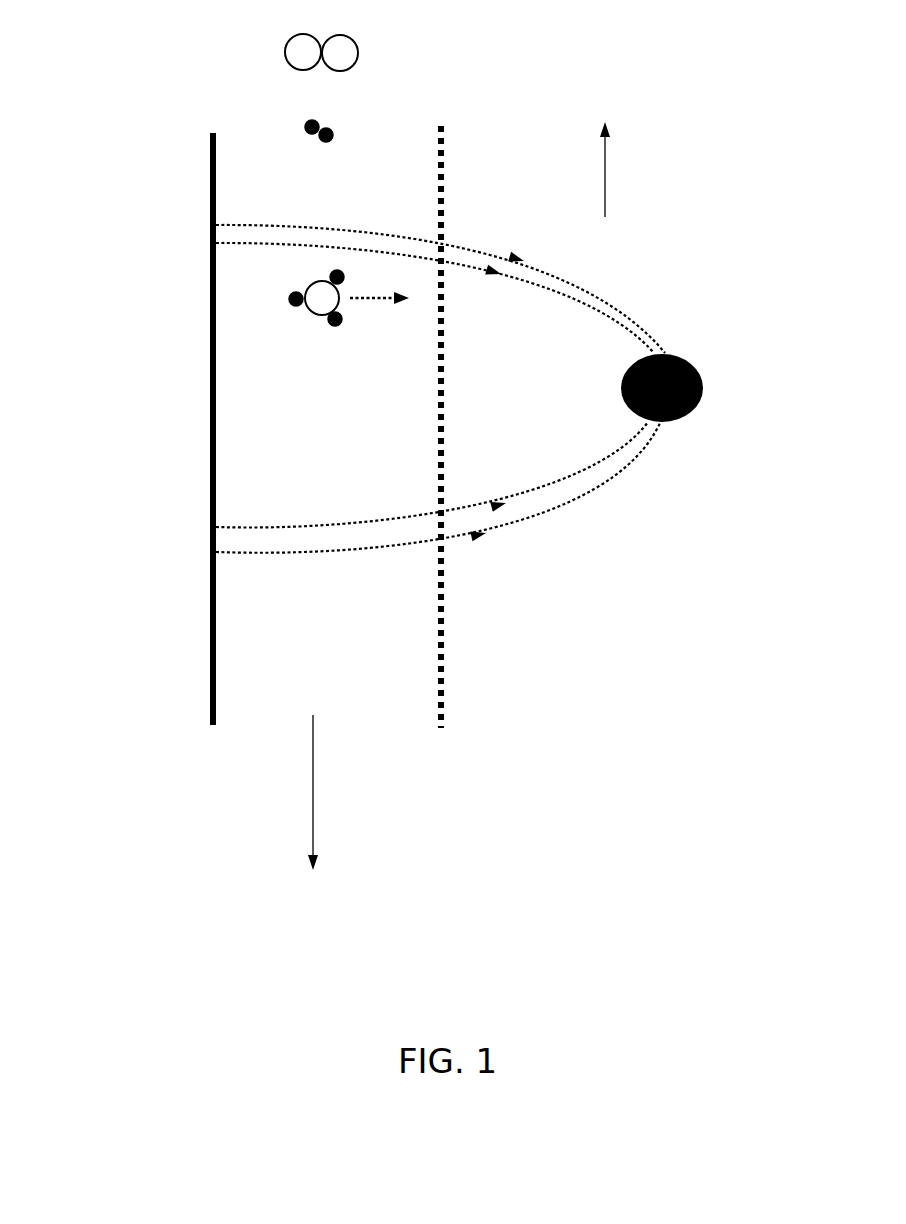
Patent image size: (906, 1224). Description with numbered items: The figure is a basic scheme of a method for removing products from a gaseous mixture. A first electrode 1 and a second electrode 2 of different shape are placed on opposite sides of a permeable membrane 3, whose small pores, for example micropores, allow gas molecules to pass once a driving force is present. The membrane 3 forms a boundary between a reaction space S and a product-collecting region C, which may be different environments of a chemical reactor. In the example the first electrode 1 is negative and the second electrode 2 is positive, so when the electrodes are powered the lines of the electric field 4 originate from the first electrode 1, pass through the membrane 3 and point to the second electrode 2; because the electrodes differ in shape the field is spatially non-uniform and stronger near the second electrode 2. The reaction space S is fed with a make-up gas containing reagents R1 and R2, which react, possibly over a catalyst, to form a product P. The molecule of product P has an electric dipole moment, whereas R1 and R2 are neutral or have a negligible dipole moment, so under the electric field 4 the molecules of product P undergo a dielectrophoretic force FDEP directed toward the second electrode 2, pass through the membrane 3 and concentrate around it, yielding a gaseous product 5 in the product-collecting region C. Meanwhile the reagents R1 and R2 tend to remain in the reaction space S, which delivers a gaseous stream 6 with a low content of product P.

The first electrode 1 is at (211, 646).
The second electrode 2 is at (701, 377).
The permeable membrane 3 is at (442, 673).
The lines of the electric field 4 is at (553, 513).
The gaseous product 5 is at (603, 147).
The gaseous stream 6 is at (311, 820).
The reagent R1 is at (333, 130).
The reagent R2 is at (358, 50).
The product P is at (311, 313).
The dielectrophoretic force FDEP is at (382, 328).
The reaction space S is at (342, 640).
The product-collecting region C is at (672, 639).